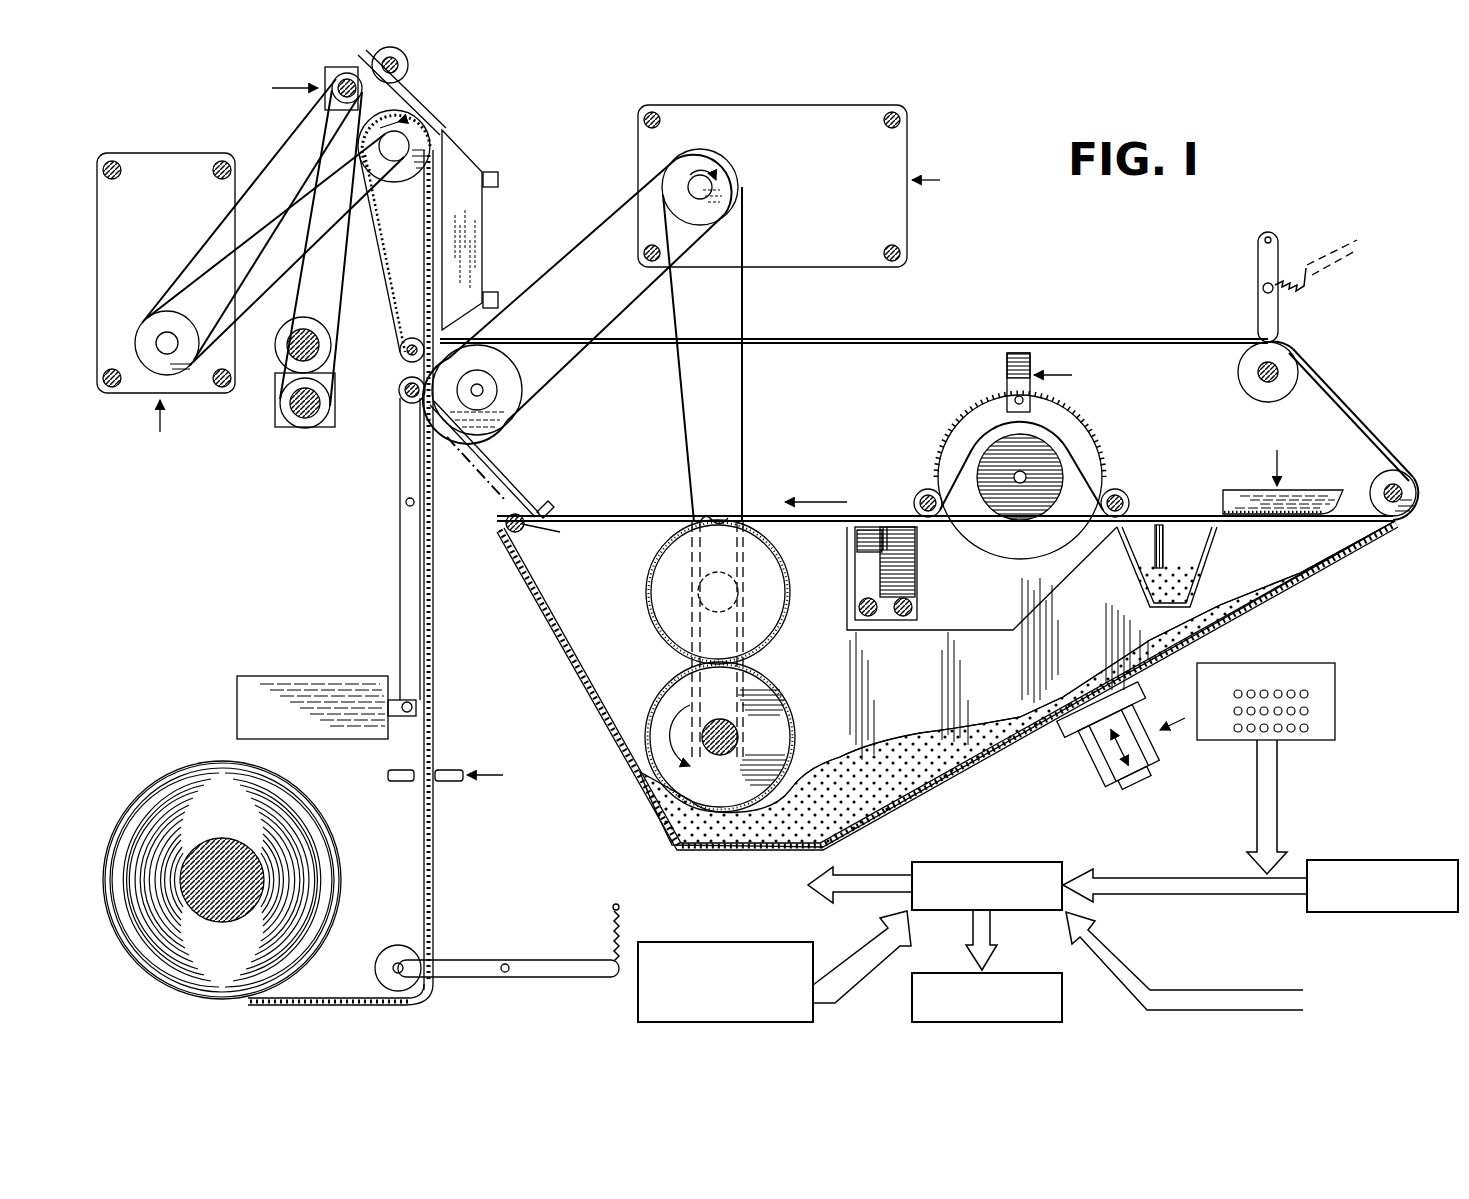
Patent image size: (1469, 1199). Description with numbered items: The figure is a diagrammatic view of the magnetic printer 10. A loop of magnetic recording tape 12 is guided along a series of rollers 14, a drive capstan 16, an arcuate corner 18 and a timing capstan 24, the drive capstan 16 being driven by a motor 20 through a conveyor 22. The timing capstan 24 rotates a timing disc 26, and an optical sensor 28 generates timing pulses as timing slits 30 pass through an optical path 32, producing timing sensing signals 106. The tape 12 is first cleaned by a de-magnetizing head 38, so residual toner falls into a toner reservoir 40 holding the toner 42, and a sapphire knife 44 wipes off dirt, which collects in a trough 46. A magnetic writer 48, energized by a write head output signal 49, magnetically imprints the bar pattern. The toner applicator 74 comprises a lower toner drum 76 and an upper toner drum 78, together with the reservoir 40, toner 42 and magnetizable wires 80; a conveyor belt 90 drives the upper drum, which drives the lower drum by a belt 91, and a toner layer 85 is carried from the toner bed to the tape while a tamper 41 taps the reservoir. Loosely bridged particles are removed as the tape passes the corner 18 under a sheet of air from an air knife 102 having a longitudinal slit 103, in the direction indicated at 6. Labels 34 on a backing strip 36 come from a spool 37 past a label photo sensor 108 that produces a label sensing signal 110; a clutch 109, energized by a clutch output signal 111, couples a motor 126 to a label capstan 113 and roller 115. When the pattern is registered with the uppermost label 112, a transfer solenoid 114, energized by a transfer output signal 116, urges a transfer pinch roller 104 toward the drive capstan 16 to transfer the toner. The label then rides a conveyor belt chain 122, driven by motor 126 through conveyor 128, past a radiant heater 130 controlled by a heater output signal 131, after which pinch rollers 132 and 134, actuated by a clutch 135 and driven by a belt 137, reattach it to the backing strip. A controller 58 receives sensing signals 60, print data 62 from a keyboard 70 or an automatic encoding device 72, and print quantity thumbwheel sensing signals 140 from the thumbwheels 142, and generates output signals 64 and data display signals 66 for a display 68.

The arrow direction 6 is at (505, 500).
The magnetic printer 10 is at (1058, 308).
The magnetic recording tape 12 is at (1383, 450).
The rollers 14 is at (1247, 384).
The drive capstan 16 is at (503, 413).
The arcuate corner 18 is at (552, 503).
The motor 20 is at (816, 199).
The conveyor 22 is at (583, 244).
The timing capstan 24 is at (1013, 505).
The timing disc 26 is at (1099, 445).
The optical sensor 28 is at (1012, 350).
The timing slits 30 is at (944, 436).
The optical path 32 is at (1035, 400).
The labels 34 is at (440, 825).
The backing strip 36 is at (420, 878).
The spool 37 is at (150, 793).
The de-magnetizing head 38 is at (1316, 486).
The toner reservoir 40 is at (982, 762).
The tamper 41 is at (1098, 762).
The toner 42 is at (893, 752).
The sapphire knife 44 is at (1172, 540).
The trough 46 is at (1200, 582).
The magnetic writer 48 is at (920, 548).
The write head output signal 49 is at (921, 572).
The controller 58 is at (1000, 860).
The sensing signals 60 is at (1120, 952).
The print data 62 is at (1103, 875).
The output signals 64 is at (165, 432).
The data display signals 66 is at (970, 936).
The display 68 is at (1064, 993).
The keyboard 70 is at (1315, 664).
The automatic encoding device 72 is at (1404, 858).
The toner applicator 74 is at (640, 607).
The lower toner drum 76 is at (780, 717).
The upper toner drum 78 is at (667, 580).
The magnetizable wires 80 is at (717, 638).
The toner layer 85 is at (790, 600).
The conveyor belt 90 is at (744, 302).
The belt 91 is at (668, 675).
The air knife 102 is at (520, 533).
The longitudinal slit 103 is at (560, 532).
The transfer pinch roller 104 is at (400, 398).
The timing sensing signals 106 is at (1007, 375).
The label photo sensor 108 is at (448, 770).
The clutch 109 is at (275, 420).
The label sensing signal 110 is at (388, 775).
The clutch output signal 111 is at (305, 432).
The uppermost label 112 is at (428, 470).
The label capstan 113 is at (335, 386).
The transfer solenoid 114 is at (338, 676).
The roller 115 is at (318, 325).
The transfer output signal 116 is at (233, 707).
The conveyor belt chain 122 is at (373, 276).
The motor 126 is at (182, 262).
The conveyor 128 is at (300, 203).
The radiant heater 130 is at (457, 148).
The heater output signal 131 is at (540, 180).
The pinch roller 132 is at (335, 68).
The pinch roller 134 is at (410, 62).
The clutch 135 is at (320, 80).
The belt 137 is at (206, 232).
The print quantity thumbwheel sensing signals 140 is at (855, 948).
The print quantity thumbwheels 142 is at (735, 942).